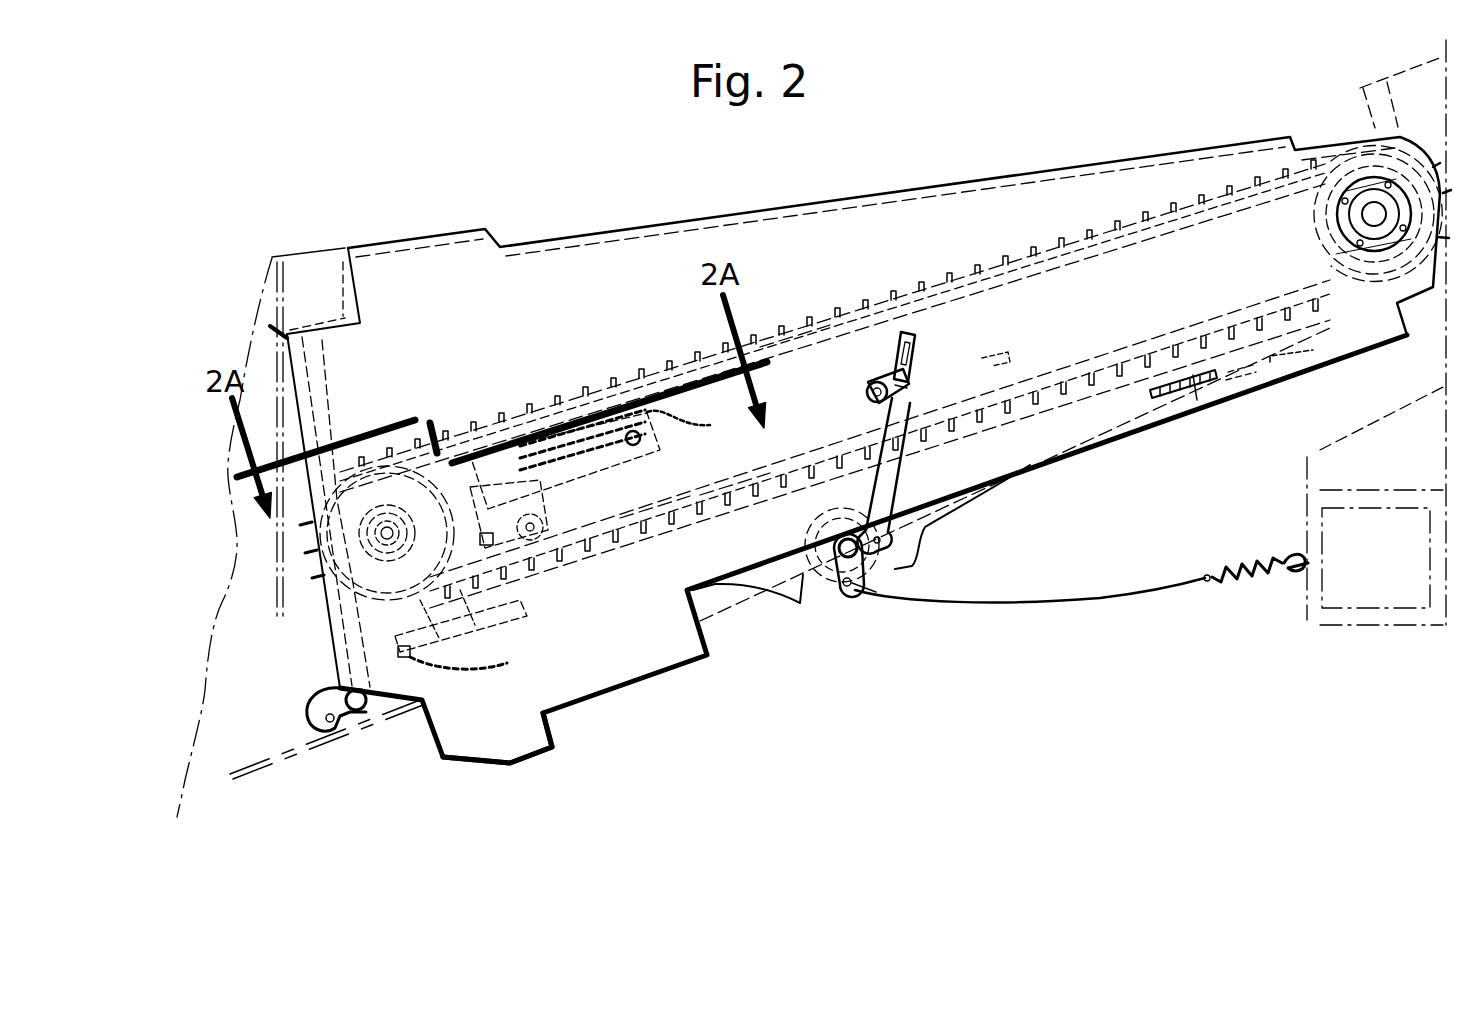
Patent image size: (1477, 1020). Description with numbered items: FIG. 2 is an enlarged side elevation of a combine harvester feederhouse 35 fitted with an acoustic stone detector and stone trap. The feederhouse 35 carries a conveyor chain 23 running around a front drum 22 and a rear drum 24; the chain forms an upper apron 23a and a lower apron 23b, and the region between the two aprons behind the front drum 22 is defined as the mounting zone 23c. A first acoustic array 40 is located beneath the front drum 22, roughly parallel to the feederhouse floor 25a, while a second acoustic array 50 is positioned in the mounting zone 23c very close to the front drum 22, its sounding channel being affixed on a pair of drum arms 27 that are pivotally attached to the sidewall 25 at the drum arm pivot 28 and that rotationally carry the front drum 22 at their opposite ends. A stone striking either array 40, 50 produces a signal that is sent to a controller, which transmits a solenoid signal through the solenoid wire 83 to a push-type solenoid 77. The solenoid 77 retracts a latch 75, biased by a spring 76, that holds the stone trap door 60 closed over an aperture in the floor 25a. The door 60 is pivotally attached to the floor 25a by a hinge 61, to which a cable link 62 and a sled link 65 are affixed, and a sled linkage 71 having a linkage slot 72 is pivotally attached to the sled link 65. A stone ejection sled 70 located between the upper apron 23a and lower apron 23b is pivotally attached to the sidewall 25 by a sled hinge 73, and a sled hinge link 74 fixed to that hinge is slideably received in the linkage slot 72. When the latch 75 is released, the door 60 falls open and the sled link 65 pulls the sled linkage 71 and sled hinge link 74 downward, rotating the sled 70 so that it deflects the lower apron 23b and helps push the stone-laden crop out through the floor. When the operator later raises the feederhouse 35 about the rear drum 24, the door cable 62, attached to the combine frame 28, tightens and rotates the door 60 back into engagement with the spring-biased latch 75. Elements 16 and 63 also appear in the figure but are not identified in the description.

The frame 16 is at (262, 367).
The front drum 22 is at (397, 490).
The conveyor chain 23 is at (928, 293).
The upper apron 23a is at (793, 335).
The lower apron 23b is at (737, 485).
The mounting zone 23c is at (652, 497).
The rear drum 24 is at (1325, 197).
The sidewall 25 is at (836, 222).
The feederhouse floor 25a is at (637, 488).
The drum arms 27 is at (520, 455).
The drum arm pivot 28 is at (1342, 625).
The feederhouse 35 is at (563, 738).
The first acoustic array 40 is at (420, 668).
The second acoustic array 50 is at (497, 493).
The stone trap door 60 is at (948, 518).
The hinge 61 is at (827, 572).
The door cable 62 is at (1082, 600).
The pin 63 is at (857, 585).
The sled link 65 is at (887, 567).
The stone ejection sled 70 is at (993, 377).
The sled linkage 71 is at (987, 367).
The linkage slot 72 is at (917, 347).
The sled hinge 73 is at (863, 393).
The sled hinge link 74 is at (953, 378).
The latch 75 is at (1163, 398).
The spring 76 is at (1193, 375).
The solenoid 77 is at (1253, 367).
The solenoid wire 83 is at (1303, 363).